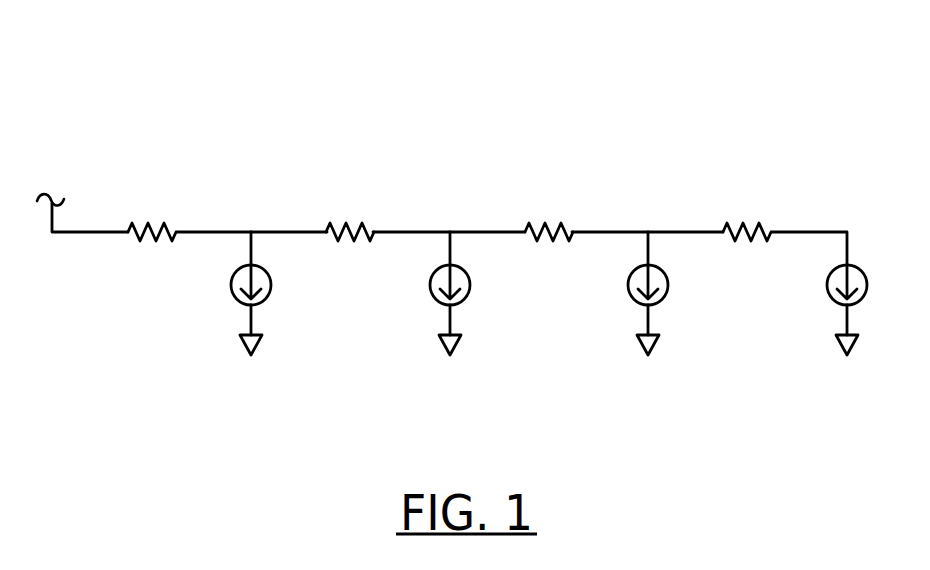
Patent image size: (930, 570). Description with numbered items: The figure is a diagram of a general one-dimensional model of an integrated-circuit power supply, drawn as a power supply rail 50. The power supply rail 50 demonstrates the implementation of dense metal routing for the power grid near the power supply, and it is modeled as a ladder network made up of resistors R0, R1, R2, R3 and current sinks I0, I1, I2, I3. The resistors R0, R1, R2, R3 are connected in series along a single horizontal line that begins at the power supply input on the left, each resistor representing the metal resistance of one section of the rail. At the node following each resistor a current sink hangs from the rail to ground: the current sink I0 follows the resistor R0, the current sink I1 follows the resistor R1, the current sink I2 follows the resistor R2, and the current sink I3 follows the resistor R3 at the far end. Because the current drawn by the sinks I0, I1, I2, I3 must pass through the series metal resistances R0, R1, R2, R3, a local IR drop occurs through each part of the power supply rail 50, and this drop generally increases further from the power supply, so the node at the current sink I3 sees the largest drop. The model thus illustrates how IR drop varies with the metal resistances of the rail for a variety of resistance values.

The power supply rail 50 is at (415, 53).
The resistor R0 is at (152, 214).
The resistor R1 is at (350, 214).
The resistor R2 is at (549, 214).
The resistor R3 is at (747, 214).
The current sink I0 is at (273, 293).
The current sink I1 is at (472, 293).
The current sink I2 is at (670, 293).
The current sink I3 is at (869, 310).